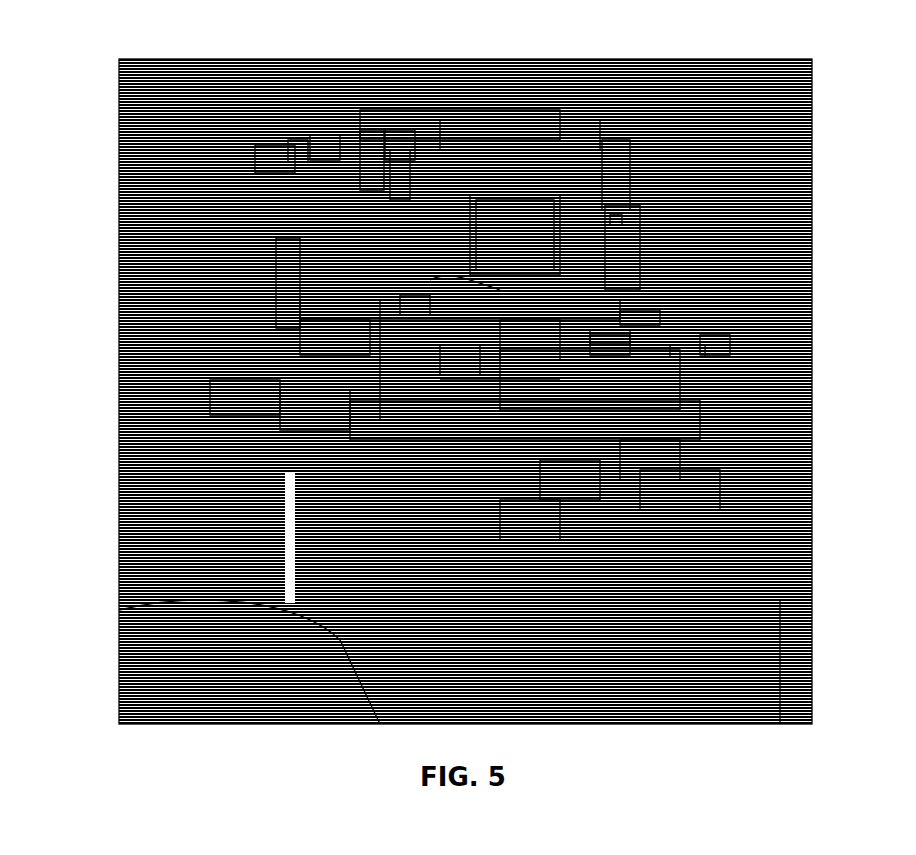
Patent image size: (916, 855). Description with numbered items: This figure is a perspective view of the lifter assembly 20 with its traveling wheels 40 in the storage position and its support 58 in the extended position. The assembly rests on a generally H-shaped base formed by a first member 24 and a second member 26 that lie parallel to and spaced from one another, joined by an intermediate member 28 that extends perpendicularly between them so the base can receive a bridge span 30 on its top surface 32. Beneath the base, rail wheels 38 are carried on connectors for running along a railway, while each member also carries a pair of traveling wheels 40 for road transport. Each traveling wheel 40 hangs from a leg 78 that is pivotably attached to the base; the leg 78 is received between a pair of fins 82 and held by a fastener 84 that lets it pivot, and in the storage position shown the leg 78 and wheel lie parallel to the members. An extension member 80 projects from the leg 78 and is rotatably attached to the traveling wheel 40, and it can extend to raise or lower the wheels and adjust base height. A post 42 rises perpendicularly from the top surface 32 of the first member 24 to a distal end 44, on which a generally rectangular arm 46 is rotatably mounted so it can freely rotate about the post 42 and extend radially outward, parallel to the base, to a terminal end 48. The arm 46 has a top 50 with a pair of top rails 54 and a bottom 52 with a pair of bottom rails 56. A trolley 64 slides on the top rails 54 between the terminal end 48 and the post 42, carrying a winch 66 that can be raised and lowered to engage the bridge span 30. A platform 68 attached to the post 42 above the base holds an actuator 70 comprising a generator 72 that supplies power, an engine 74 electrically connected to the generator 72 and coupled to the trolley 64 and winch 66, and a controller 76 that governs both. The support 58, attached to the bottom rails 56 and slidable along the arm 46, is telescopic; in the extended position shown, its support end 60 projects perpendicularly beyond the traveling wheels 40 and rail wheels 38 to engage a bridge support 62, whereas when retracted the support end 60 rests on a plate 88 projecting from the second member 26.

The lifter assembly 20 is at (221, 122).
The first member 24 is at (584, 300).
The second member 26 is at (520, 415).
The intermediate member 28 is at (525, 352).
The bridge span 30 is at (815, 584).
The top surface 32 is at (546, 285).
The rail wheels 38 is at (560, 410).
The traveling wheels 40 is at (240, 406).
The post 42 is at (618, 183).
The distal end 44 is at (600, 150).
The arm 46 is at (398, 136).
The terminal end 48 is at (260, 190).
The top 50 is at (318, 150).
The bottom 52 is at (370, 190).
The top rails 54 is at (302, 140).
The bottom rails 56 is at (406, 190).
The support 58 is at (278, 262).
The support end 60 is at (292, 604).
The bridge support 62 is at (140, 656).
The trolley 64 is at (395, 112).
The winch 66 is at (320, 400).
The platform 68 is at (450, 300).
The actuator 70 is at (486, 214).
The generator 72 is at (480, 282).
The engine 74 is at (625, 252).
The controller 76 is at (618, 237).
The leg 78 is at (395, 300).
The extension member 80 is at (730, 460).
The fins 82 is at (610, 352).
The fastener 84 is at (652, 322).
The plate 88 is at (470, 372).